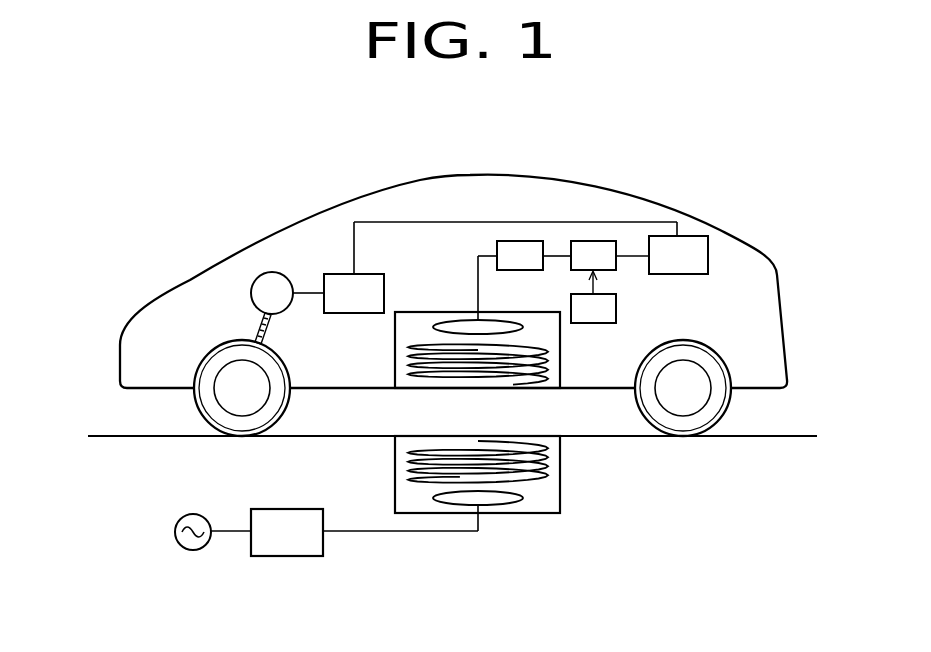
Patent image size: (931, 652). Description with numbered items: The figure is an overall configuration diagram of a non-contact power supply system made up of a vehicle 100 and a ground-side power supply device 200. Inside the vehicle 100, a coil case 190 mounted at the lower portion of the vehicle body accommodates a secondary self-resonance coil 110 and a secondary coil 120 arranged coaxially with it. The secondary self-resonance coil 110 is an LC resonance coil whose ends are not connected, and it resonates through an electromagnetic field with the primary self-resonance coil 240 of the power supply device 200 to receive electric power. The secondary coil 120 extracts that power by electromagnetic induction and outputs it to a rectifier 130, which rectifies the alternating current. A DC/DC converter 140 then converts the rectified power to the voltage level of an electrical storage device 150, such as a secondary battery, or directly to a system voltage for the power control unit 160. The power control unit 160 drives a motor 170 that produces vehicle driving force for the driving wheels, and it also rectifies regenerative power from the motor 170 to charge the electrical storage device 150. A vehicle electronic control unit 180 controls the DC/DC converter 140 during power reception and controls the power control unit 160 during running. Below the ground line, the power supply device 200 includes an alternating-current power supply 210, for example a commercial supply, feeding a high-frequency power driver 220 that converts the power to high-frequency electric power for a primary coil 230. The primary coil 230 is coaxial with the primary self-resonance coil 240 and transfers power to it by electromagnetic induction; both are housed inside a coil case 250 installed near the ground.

The vehicle 100 is at (537, 178).
The secondary self-resonance coil 110 is at (395, 366).
The secondary coil 120 is at (457, 319).
The rectifier 130 is at (518, 270).
The DC/DC converter 140 is at (608, 270).
The electrical storage device 150 is at (708, 255).
The power control unit 160 is at (348, 274).
The motor 170 is at (251, 296).
The vehicle electronic control unit 180 is at (616, 312).
The coil case 190 is at (395, 330).
The power supply device 200 is at (382, 548).
The alternating-current power supply 210 is at (193, 513).
The high-frequency power driver 220 is at (283, 509).
The primary coil 230 is at (497, 506).
The primary self-resonance coil 240 is at (395, 460).
The coil case 250 is at (395, 485).